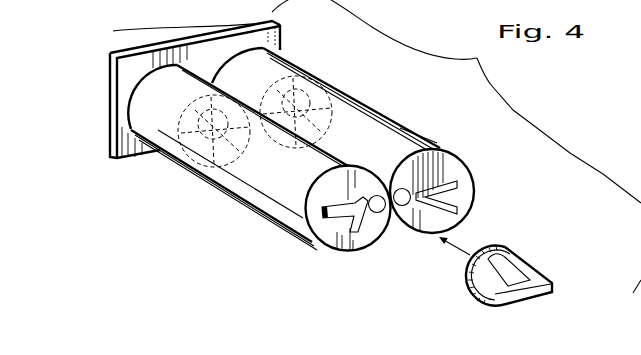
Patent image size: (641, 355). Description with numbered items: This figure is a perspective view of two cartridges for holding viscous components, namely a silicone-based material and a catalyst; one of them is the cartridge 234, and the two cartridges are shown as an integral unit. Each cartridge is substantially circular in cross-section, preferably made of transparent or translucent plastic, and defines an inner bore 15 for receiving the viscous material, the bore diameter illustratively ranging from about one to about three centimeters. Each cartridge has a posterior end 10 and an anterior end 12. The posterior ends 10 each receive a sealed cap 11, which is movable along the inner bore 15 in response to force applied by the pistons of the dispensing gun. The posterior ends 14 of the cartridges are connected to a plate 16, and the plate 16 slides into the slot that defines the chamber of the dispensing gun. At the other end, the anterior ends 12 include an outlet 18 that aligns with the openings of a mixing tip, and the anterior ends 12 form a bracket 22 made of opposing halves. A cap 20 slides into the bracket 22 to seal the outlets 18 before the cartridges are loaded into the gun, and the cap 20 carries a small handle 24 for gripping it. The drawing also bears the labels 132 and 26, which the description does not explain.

The posterior end 10 is at (150, 64).
The plate 16 is at (285, 43).
The posterior end 14 is at (286, 49).
The sealed cap 11 is at (348, 104).
The groove 132 is at (231, 200).
The inner bore 15 is at (274, 130).
The anterior end 12 is at (320, 246).
The bracket 22 is at (357, 251).
The outlet 18 is at (410, 206).
The cartridge 234 is at (437, 143).
The cap 20 is at (527, 285).
The ring 26 is at (512, 246).
The small handle 24 is at (557, 287).